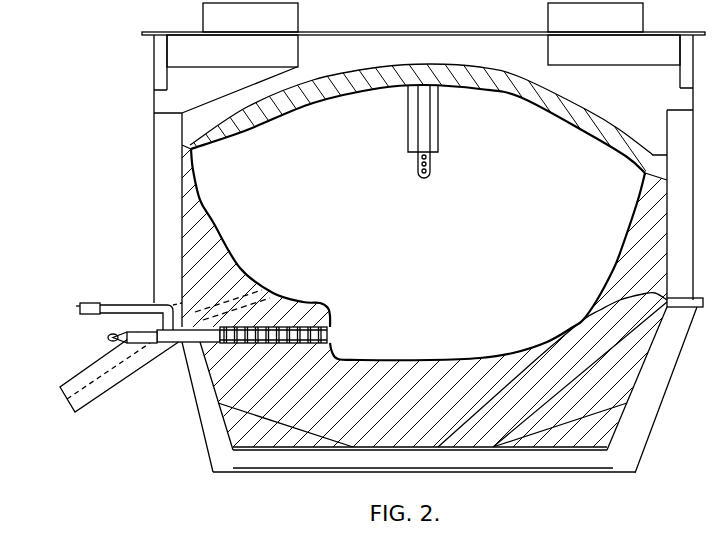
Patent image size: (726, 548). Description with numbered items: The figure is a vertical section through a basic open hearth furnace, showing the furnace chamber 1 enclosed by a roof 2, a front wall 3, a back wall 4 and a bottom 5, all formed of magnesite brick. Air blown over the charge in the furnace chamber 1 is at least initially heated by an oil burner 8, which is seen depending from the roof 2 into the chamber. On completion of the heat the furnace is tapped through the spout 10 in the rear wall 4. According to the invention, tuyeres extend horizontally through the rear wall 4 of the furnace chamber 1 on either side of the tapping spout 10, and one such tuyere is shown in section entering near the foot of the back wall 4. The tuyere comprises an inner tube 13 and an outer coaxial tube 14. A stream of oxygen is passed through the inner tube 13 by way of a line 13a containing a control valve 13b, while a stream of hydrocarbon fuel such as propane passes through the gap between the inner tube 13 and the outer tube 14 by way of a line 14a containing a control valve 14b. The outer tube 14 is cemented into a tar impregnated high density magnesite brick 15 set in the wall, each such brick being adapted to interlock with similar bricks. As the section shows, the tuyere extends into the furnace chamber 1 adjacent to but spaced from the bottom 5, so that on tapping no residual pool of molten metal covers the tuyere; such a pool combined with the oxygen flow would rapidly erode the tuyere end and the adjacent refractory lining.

The furnace chamber 1 is at (418, 221).
The roof 2 is at (562, 99).
The front wall 3 is at (662, 210).
The back wall 4 is at (189, 202).
The bottom 5 is at (343, 423).
The oil burner 8 is at (425, 133).
The spout 10 is at (72, 392).
The inner tube 13 is at (147, 338).
The line 13a is at (111, 340).
The control valve 13b is at (123, 332).
The outer coaxial tube 14 is at (192, 338).
The line 14a is at (128, 304).
The control valve 14b is at (108, 305).
The tar impregnated high density magnesite brick 15 is at (328, 334).